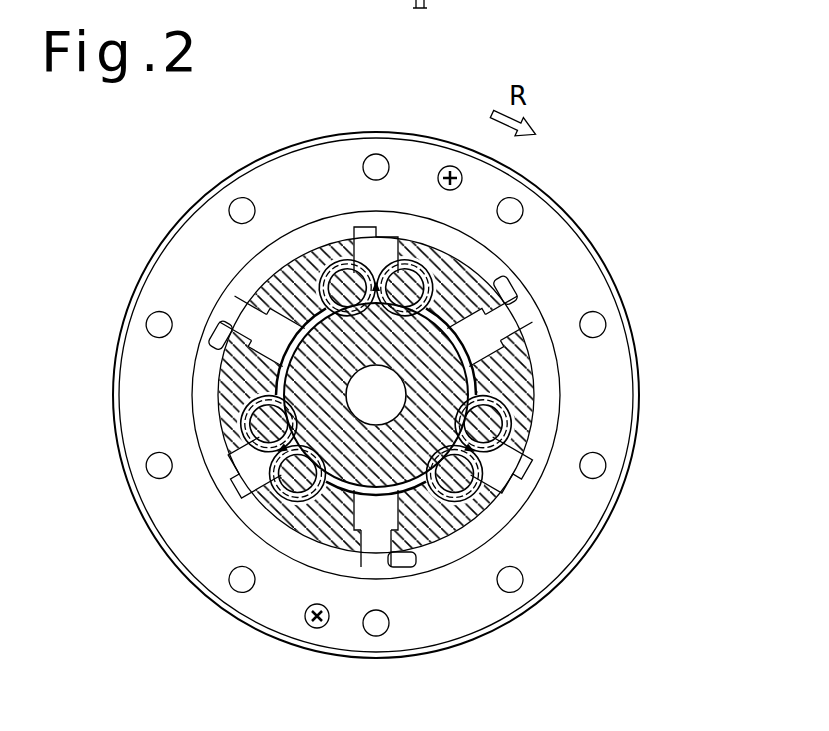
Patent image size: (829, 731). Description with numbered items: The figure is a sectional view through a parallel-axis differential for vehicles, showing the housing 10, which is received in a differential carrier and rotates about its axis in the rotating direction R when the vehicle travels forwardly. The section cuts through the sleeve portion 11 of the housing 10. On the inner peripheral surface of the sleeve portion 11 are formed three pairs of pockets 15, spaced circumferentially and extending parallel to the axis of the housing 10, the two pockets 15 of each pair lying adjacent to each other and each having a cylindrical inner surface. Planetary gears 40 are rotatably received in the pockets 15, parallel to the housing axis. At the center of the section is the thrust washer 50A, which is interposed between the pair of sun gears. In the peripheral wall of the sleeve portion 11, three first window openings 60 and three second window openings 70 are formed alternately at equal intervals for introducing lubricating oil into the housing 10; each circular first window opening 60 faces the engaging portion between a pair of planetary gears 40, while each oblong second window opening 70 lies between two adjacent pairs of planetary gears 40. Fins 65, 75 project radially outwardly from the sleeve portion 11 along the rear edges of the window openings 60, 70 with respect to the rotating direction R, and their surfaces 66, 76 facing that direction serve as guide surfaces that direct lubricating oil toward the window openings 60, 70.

The housing 10 is at (548, 184).
The sleeve portion 11 is at (513, 247).
The pockets 15 is at (325, 215).
The planetary gears 40 is at (302, 252).
The thrust washer 50A is at (440, 384).
The first window openings 60 is at (400, 262).
The fins 65 is at (336, 262).
The guide surfaces 66 is at (345, 258).
The second window openings 70 is at (517, 304).
The fins 75 is at (530, 283).
The guide surfaces 76 is at (530, 285).